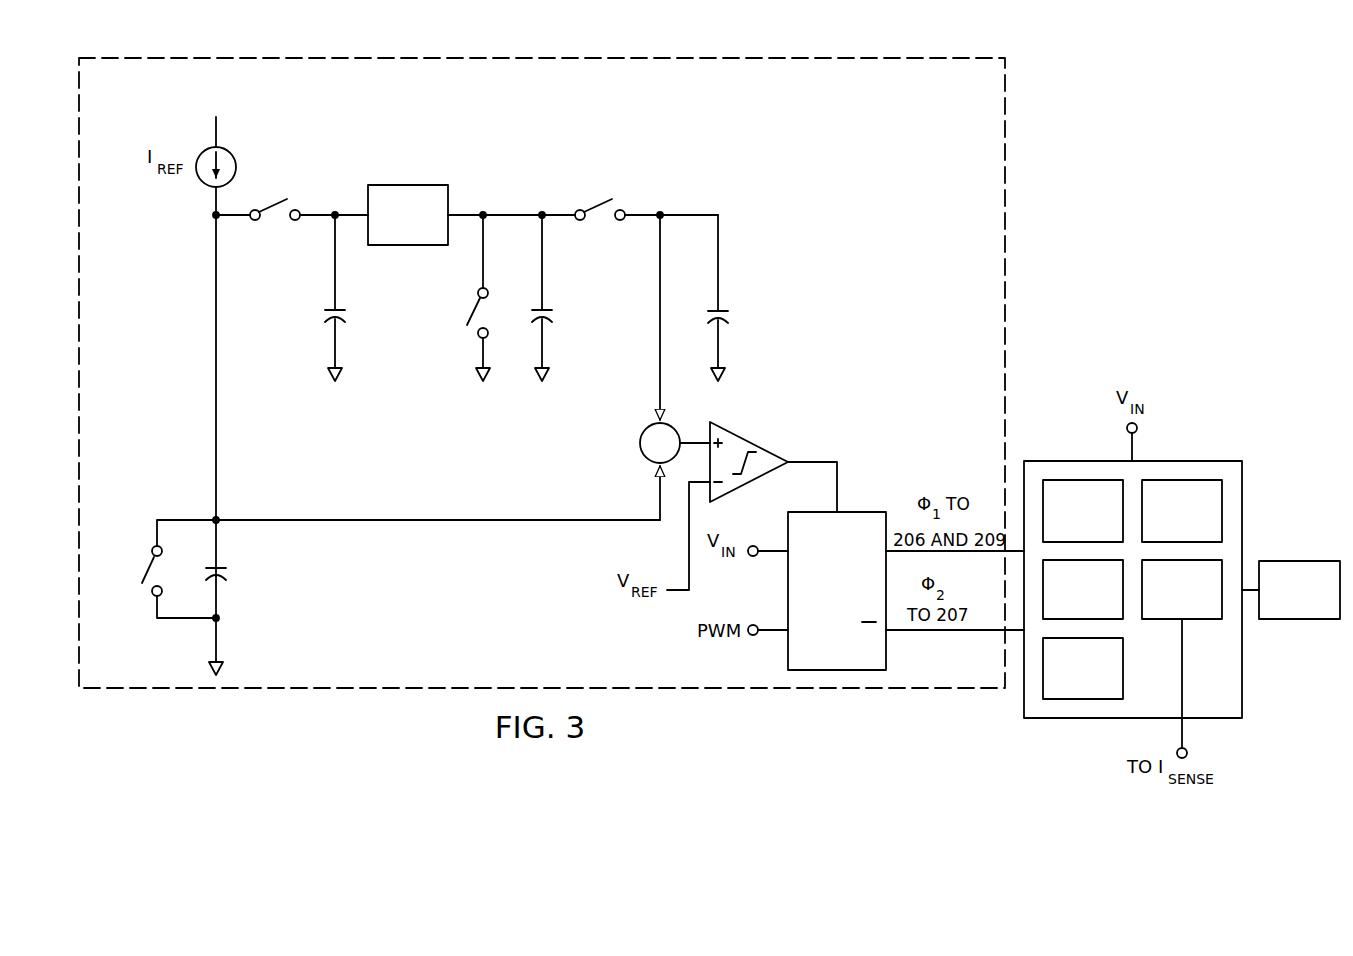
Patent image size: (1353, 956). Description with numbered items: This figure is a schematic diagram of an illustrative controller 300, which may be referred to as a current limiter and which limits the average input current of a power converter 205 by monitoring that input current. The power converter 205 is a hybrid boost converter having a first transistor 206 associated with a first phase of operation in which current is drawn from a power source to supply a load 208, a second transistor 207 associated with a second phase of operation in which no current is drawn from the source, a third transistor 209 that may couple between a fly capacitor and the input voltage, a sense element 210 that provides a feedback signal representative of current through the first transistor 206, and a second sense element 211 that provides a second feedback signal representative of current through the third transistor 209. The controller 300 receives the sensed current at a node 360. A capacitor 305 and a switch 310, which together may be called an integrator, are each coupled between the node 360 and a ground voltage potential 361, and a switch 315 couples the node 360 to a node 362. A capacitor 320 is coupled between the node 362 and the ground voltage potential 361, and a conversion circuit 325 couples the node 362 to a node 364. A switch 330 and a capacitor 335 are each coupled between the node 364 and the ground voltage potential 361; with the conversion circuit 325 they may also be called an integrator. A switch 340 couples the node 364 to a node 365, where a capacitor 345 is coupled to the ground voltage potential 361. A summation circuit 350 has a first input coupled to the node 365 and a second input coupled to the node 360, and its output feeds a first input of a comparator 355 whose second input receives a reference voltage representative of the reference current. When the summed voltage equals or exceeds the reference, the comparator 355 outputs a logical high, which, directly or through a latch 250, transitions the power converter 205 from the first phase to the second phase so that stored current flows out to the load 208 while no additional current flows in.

The controller 300 is at (365, 56).
The capacitor 305 is at (231, 572).
The switch 310 is at (148, 570).
The switch 315 is at (270, 200).
The capacitor 320 is at (325, 312).
The conversion circuit 325 is at (425, 215).
The switch 330 is at (477, 308).
The capacitor 335 is at (555, 312).
The switch 340 is at (600, 201).
The capacitor 345 is at (731, 312).
The summation circuit 350 is at (645, 458).
The comparator 355 is at (750, 442).
The node 360 is at (214, 220).
The ground voltage potential 361 is at (328, 378).
The node 362 is at (335, 210).
The node 364 is at (483, 210).
The node 365 is at (660, 210).
The latch 250 is at (886, 591).
The power converter 205 is at (1186, 458).
The first transistor 206 is at (1083, 511).
The second transistor 207 is at (1083, 589).
The load 208 is at (1291, 590).
The third transistor 209 is at (1182, 511).
The sense element 210 is at (1182, 659).
The second sense element 211 is at (1083, 668).